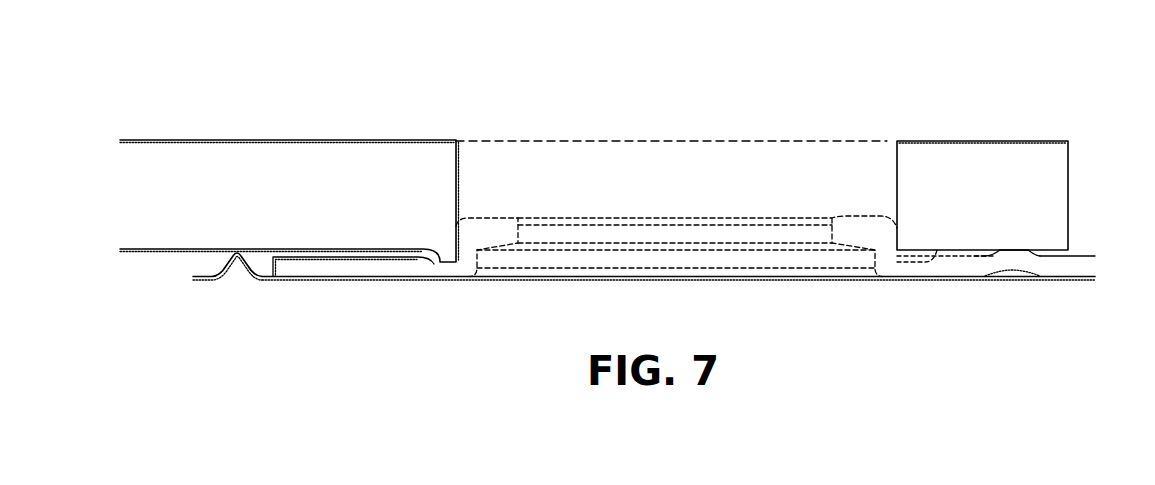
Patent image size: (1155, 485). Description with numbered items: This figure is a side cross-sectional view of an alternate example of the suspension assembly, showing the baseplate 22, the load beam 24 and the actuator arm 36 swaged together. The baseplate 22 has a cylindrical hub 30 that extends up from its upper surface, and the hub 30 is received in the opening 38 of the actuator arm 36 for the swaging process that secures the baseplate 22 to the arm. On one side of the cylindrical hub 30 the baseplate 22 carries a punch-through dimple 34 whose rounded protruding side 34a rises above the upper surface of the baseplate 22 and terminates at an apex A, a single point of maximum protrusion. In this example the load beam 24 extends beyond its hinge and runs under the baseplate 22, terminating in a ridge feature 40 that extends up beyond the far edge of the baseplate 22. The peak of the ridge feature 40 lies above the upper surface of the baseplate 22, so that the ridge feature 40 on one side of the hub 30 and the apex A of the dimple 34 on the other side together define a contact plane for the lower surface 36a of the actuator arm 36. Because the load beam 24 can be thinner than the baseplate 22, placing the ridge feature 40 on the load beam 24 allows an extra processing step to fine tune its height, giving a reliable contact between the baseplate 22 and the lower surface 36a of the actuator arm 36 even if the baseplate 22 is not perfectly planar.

The baseplate 22 is at (1083, 253).
The load beam 24 is at (362, 280).
The cylindrical hub 30 is at (855, 218).
The dimple 34 is at (1028, 249).
The protruding side 34a is at (987, 250).
The actuator arm 36 is at (152, 139).
The lower surface of the actuator arm 36a is at (140, 250).
The opening 38 is at (457, 170).
The ridge feature 40 is at (228, 253).
The apex A is at (1010, 252).